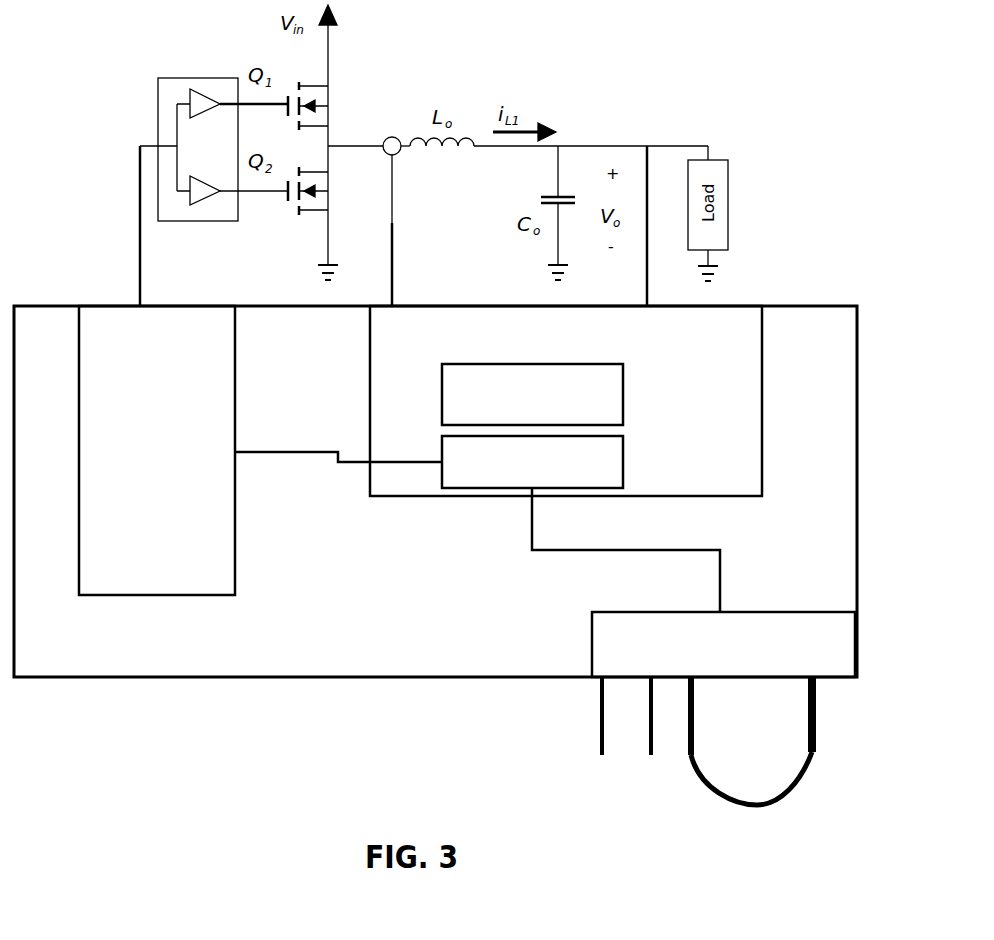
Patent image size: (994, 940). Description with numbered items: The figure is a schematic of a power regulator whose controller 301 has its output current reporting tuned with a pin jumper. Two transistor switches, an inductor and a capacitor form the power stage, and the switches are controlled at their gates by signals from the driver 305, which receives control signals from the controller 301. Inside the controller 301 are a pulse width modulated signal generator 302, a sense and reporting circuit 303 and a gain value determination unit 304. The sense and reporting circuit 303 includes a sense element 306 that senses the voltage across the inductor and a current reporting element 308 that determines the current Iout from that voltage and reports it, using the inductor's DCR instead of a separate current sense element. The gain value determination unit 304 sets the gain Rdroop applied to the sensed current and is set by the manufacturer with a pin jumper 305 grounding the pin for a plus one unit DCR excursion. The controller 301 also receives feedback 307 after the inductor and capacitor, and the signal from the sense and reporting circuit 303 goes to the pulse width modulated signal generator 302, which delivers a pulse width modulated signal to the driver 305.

The controller 301 is at (435, 491).
The pulse width modulated signal generator 302 is at (260, 370).
The sense and reporting circuit 303 is at (762, 345).
The gain value determination unit 304 is at (778, 612).
The driver 305 is at (168, 93).
The sense element 306 is at (623, 388).
The feedback 307 is at (673, 125).
The current reporting element 308 is at (623, 455).